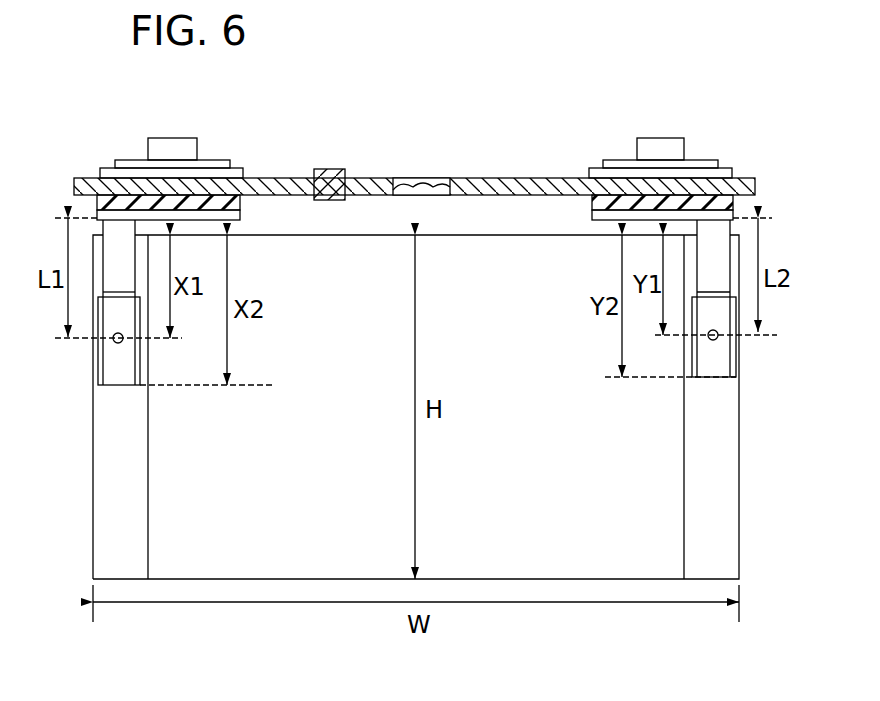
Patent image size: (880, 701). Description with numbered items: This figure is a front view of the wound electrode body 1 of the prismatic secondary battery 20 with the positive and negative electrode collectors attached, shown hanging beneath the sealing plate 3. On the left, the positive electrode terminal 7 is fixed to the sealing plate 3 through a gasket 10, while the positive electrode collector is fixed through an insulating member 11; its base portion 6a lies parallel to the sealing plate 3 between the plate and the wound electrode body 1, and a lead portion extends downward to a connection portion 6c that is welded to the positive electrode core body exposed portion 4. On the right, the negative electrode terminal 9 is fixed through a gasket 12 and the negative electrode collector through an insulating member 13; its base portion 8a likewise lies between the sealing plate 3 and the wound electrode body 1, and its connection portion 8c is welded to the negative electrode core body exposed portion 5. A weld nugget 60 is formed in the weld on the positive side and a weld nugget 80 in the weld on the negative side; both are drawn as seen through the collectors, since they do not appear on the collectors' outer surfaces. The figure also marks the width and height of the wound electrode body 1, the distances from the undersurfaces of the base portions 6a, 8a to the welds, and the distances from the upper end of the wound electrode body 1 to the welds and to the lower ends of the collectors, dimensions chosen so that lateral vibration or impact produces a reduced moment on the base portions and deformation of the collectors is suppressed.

The wound electrode body 1 is at (268, 557).
The sealing plate 3 is at (505, 178).
The positive electrode core body exposed portion 4 is at (115, 500).
The negative electrode core body exposed portion 5 is at (720, 518).
The base portion 6a is at (216, 199).
The connection portion 6c is at (120, 372).
The positive electrode terminal 7 is at (170, 149).
The base portion 8a is at (733, 216).
The connection portion 8c is at (718, 363).
The negative electrode terminal 9 is at (656, 150).
The gasket 10 is at (128, 176).
The insulating member 11 is at (222, 190).
The gasket 12 is at (692, 173).
The insulating member 13 is at (618, 197).
The prismatic secondary battery 20 is at (342, 118).
The weld nugget 60 is at (113, 340).
The weld nugget 80 is at (718, 337).